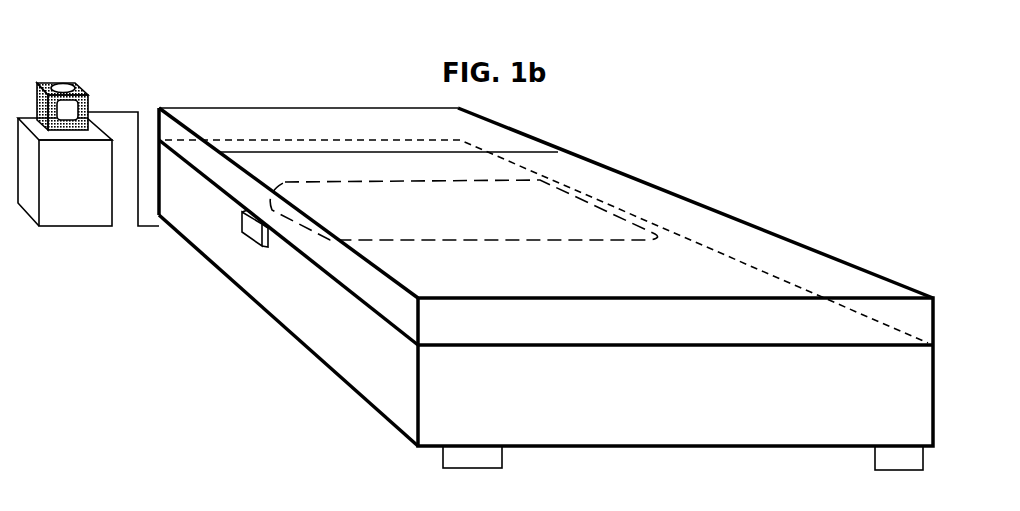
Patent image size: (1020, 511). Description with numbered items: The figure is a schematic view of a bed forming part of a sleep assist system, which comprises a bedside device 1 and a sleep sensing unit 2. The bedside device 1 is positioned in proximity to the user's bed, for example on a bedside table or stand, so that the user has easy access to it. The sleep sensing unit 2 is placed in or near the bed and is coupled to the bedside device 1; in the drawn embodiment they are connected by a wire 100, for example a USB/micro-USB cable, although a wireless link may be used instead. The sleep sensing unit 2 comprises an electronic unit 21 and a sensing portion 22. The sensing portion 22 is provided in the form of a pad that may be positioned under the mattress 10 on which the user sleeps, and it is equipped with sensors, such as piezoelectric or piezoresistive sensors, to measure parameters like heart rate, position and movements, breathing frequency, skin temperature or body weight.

The bedside device 1 is at (68, 79).
The mattress 10 is at (825, 232).
The wire 100 is at (160, 228).
The sleep sensing unit 2 is at (437, 272).
The electronic unit 21 is at (243, 234).
The sensing portion 22 is at (386, 245).